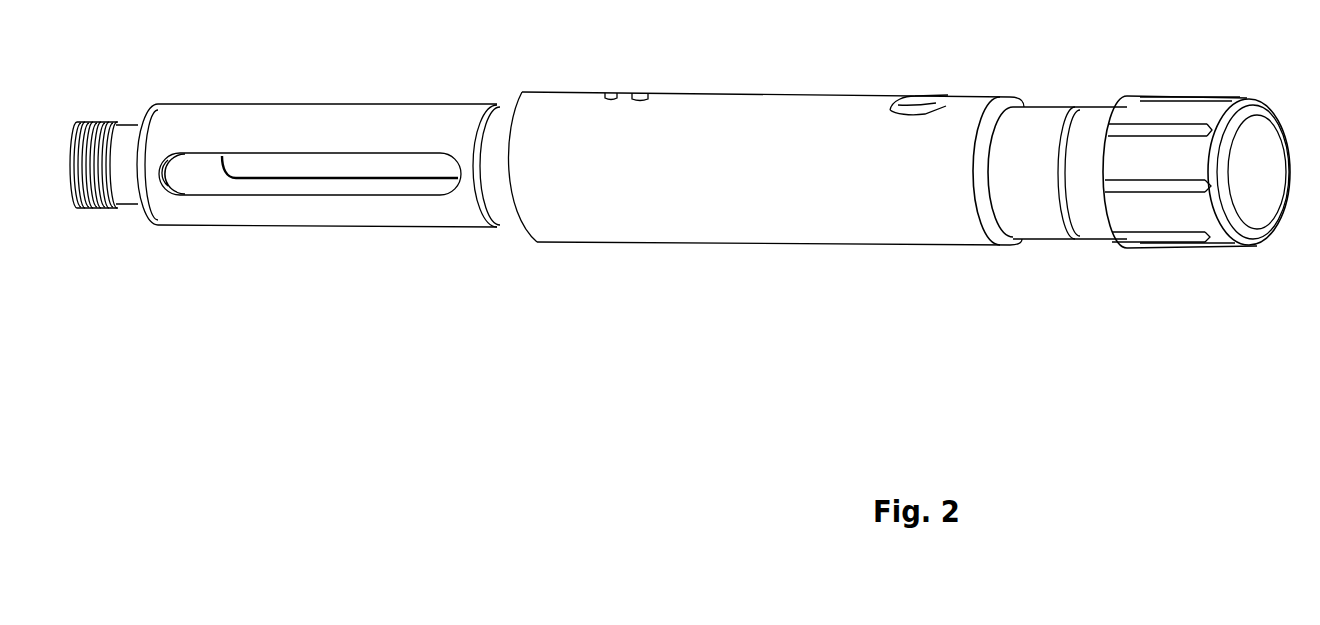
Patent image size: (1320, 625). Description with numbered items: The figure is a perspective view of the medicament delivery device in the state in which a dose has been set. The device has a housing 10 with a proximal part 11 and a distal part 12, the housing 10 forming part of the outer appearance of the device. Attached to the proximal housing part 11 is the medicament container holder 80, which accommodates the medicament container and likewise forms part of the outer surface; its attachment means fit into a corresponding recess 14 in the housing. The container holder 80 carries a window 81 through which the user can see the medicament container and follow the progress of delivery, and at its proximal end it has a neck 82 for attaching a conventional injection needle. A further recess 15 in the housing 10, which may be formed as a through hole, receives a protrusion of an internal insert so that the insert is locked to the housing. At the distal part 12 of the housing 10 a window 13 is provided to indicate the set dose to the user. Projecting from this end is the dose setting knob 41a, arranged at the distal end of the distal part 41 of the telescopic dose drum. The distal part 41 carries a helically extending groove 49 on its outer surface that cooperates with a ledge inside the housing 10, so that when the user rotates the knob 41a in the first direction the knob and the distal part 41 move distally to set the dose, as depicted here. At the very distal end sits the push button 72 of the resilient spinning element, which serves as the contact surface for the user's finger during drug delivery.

The housing 10 is at (768, 105).
The proximal part of the housing 11 is at (548, 98).
The distal part of the housing 12 is at (982, 103).
The window 13 is at (922, 93).
The recess 14 is at (610, 91).
The recess 15 is at (640, 92).
The distal part of the dose drum 41 is at (1097, 228).
The dose setting knob 41a is at (1188, 112).
The groove 49 is at (1087, 103).
The push button 72 is at (1265, 130).
The medicament container holder 80 is at (348, 210).
The window 81 is at (260, 185).
The neck 82 is at (93, 207).